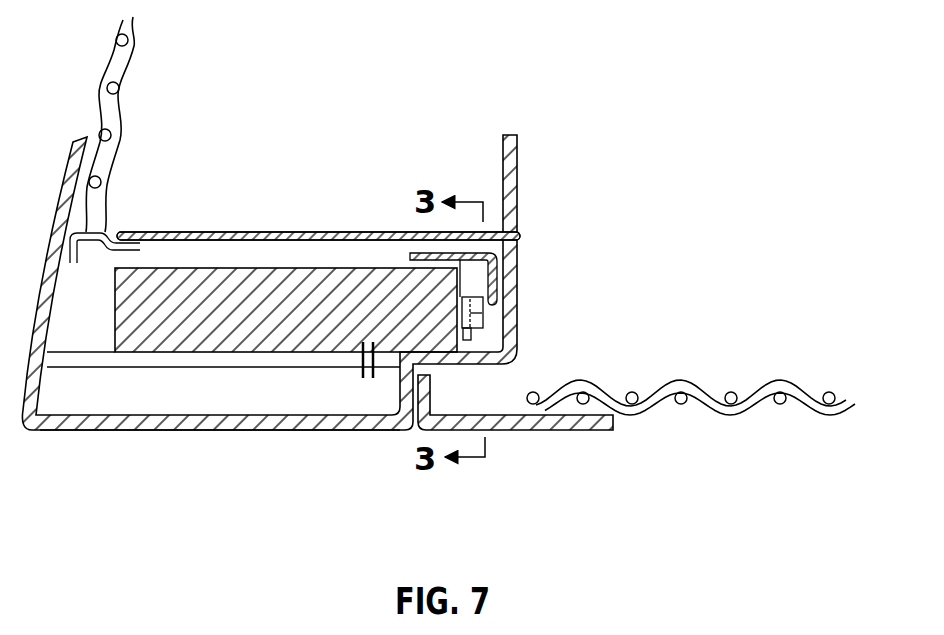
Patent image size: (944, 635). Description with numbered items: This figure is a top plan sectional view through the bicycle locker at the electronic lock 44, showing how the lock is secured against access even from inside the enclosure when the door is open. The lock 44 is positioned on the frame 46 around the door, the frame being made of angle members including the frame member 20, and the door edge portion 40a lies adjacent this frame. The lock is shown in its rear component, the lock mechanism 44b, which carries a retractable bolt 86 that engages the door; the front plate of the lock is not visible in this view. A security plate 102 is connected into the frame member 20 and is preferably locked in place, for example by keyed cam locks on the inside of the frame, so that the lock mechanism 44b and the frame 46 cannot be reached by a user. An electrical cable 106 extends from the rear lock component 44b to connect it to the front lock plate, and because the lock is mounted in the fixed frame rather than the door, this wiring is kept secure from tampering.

The frame member 20 is at (517, 160).
The frame 46 is at (118, 431).
The electronic lock 44 is at (180, 266).
The lock mechanism 44b is at (314, 282).
The security plate 102 is at (340, 231).
The retractable bolt 86 is at (485, 323).
The electrical cable 106 is at (363, 382).
The flange 40a is at (510, 431).